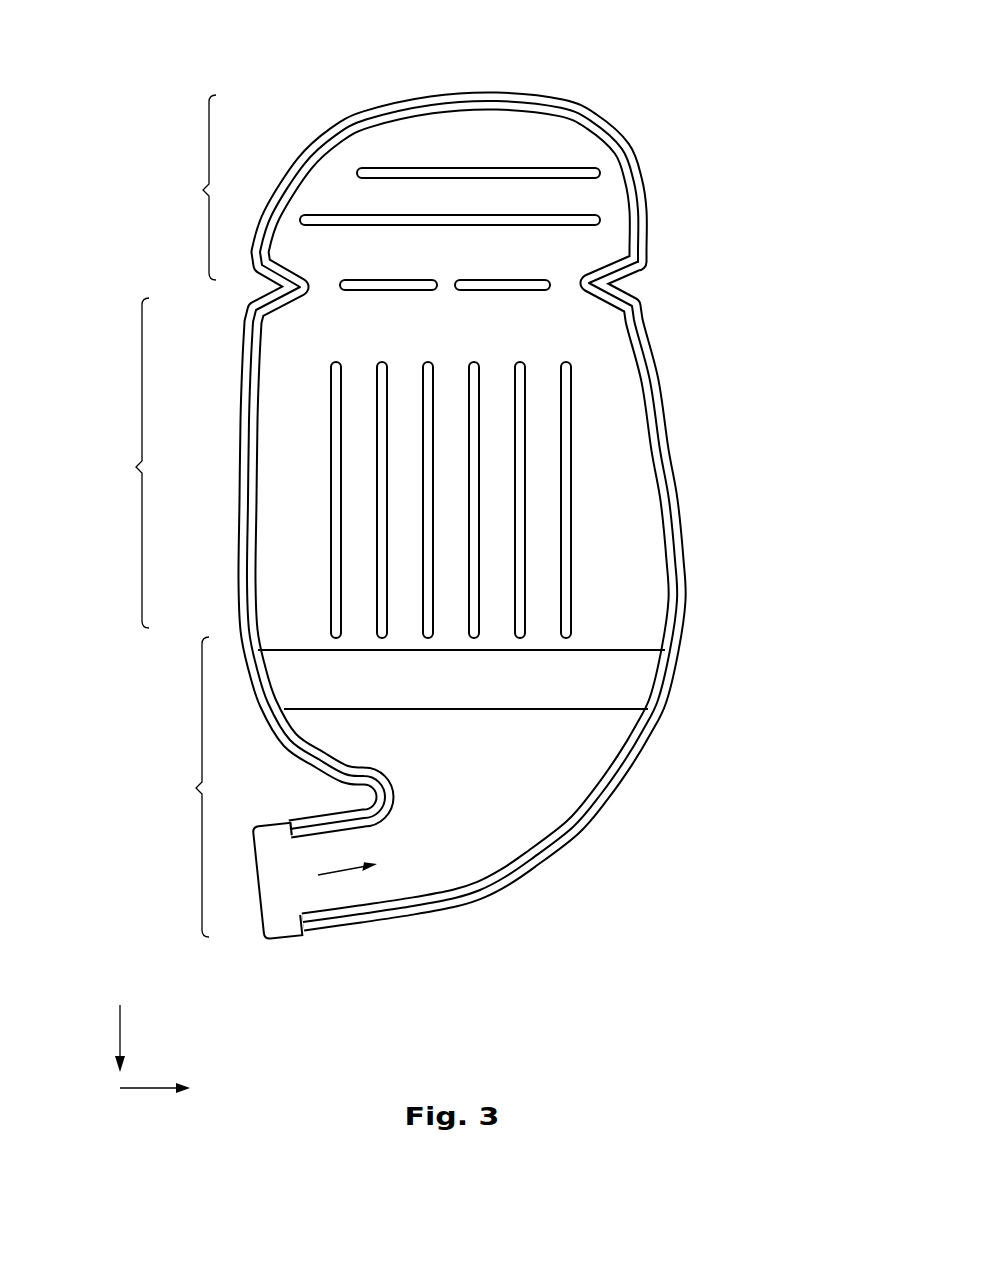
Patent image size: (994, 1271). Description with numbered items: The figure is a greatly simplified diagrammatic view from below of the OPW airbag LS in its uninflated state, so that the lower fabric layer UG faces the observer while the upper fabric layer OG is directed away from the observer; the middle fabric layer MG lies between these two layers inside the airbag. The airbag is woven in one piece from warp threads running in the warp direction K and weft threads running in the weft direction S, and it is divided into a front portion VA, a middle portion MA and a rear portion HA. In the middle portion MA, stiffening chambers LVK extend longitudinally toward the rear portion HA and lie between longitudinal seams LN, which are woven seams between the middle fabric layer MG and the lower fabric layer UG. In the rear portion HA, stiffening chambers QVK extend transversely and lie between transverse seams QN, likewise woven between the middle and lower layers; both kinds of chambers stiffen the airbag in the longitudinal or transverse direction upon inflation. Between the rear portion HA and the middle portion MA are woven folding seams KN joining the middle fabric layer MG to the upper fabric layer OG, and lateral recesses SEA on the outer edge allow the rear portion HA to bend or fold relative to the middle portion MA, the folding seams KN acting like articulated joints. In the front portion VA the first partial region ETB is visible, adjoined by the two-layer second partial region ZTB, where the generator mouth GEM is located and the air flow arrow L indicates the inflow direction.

The OPW airbag LS is at (744, 104).
The generator mouth GEM is at (265, 878).
The transverse seam QN is at (612, 220).
The folding seam KN is at (387, 291).
The longitudinal seam LN is at (335, 402).
The stiffening chamber LVK is at (363, 485).
The first partial region ETB is at (625, 680).
The middle fabric layer MG is at (627, 592).
The second partial region ZTB is at (480, 862).
The lower fabric layer UG is at (328, 168).
The upper fabric layer OG is at (513, 90).
The stiffening chamber QVK is at (450, 197).
The lateral recess SEA is at (258, 287).
The rear portion HA is at (184, 187).
The middle portion MA is at (120, 463).
The front portion VA is at (180, 787).
The air flow arrow L is at (329, 877).
The warp direction K is at (120, 1031).
The weft direction S is at (147, 1088).